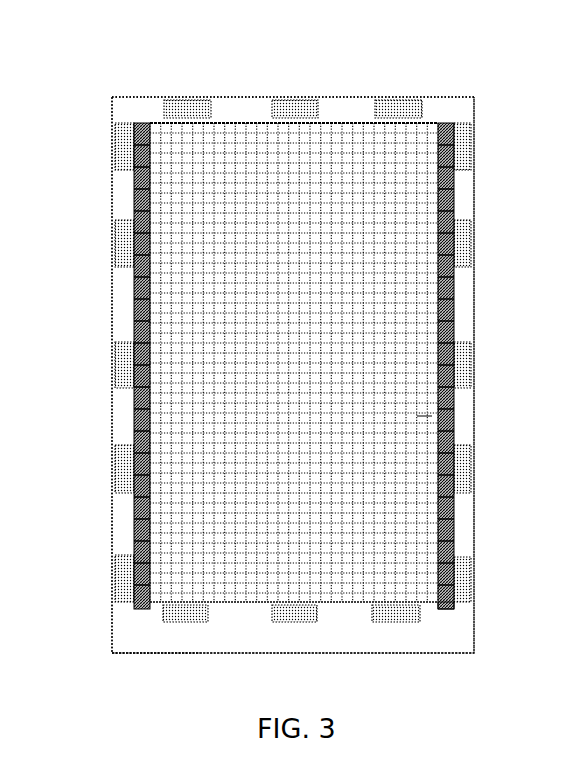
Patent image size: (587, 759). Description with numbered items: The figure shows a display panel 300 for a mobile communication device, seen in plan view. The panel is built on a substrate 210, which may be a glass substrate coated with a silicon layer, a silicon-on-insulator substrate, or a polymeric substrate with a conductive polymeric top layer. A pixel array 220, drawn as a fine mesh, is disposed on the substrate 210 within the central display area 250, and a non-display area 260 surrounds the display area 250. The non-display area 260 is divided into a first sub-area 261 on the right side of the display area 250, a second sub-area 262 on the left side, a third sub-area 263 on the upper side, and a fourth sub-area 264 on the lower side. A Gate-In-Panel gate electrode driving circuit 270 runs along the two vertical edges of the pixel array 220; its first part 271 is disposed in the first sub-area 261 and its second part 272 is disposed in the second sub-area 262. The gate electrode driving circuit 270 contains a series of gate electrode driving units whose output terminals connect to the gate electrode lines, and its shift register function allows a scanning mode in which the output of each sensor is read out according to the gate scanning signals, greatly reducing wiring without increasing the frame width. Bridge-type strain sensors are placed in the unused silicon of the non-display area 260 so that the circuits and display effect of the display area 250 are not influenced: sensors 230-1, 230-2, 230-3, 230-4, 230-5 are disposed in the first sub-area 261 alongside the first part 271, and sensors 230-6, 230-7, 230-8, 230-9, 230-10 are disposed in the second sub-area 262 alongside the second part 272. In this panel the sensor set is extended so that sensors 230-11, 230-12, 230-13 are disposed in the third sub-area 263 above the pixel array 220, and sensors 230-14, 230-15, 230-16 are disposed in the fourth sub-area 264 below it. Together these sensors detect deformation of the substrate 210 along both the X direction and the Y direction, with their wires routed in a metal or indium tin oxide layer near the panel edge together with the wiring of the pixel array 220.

The display panel 300 is at (102, 33).
The substrate 210 is at (487, 300).
The pixel array 220 is at (437, 124).
The display area 250 is at (417, 418).
The non-display area 260 is at (452, 643).
The first sub-area 261 is at (475, 523).
The second sub-area 262 is at (113, 531).
The third sub-area 263 is at (348, 104).
The fourth sub-area 264 is at (128, 641).
The gate electrode driving circuit 270 is at (472, 194).
The first part of the gate electrode driving circuit 271 is at (447, 606).
The second part of the gate electrode driving circuit 272 is at (141, 306).
The bridge-type strain sensor 230-1 is at (466, 148).
The bridge-type strain sensor 230-2 is at (466, 243).
The bridge-type strain sensor 230-3 is at (466, 363).
The bridge-type strain sensor 230-4 is at (466, 468).
The bridge-type strain sensor 230-5 is at (466, 582).
The bridge-type strain sensor 230-6 is at (124, 148).
The bridge-type strain sensor 230-7 is at (124, 244).
The bridge-type strain sensor 230-8 is at (124, 364).
The bridge-type strain sensor 230-9 is at (124, 468).
The bridge-type strain sensor 230-10 is at (124, 580).
The bridge-type strain sensor 230-11 is at (184, 100).
The bridge-type strain sensor 230-12 is at (293, 100).
The bridge-type strain sensor 230-13 is at (396, 100).
The bridge-type strain sensor 230-14 is at (185, 622).
The bridge-type strain sensor 230-15 is at (295, 622).
The bridge-type strain sensor 230-16 is at (396, 622).